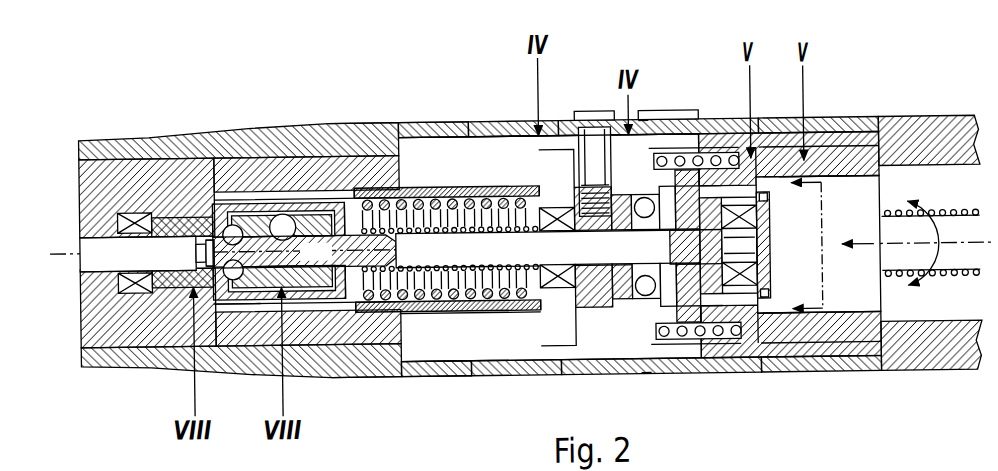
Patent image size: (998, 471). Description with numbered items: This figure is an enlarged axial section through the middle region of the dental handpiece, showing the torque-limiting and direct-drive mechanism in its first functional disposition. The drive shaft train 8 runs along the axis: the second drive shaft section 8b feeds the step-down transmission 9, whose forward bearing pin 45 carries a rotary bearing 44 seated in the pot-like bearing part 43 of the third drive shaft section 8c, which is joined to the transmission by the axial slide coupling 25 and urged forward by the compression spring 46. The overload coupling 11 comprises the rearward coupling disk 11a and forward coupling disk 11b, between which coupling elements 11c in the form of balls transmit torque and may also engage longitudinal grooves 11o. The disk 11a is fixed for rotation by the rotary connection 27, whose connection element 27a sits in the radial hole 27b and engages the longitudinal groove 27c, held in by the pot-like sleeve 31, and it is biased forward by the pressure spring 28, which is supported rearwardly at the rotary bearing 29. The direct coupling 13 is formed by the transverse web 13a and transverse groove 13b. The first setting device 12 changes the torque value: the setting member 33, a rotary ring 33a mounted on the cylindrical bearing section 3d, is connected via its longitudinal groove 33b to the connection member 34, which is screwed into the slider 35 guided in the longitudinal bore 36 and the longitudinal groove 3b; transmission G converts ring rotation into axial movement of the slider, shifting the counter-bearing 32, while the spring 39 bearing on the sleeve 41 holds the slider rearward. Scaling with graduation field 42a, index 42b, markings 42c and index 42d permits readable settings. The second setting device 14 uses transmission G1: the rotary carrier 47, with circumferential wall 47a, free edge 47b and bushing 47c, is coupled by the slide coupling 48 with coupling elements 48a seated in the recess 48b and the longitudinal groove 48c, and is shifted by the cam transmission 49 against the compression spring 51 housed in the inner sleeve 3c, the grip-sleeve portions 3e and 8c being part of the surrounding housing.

The longitudinal groove 3b is at (517, 130).
The inner sleeve 3c is at (438, 128).
The cylindrical bearing section 3d is at (698, 130).
The sleeve portion 3e is at (828, 150).
The drive shaft train 8 is at (900, 345).
The second drive shaft section 8b is at (903, 284).
The third drive shaft section 8c is at (437, 312).
The step-down transmission 9 is at (848, 300).
The overload coupling 11 is at (250, 370).
The rearward coupling disk 11a is at (322, 300).
The forward coupling disk 11b is at (165, 300).
The coupling elements 11c is at (222, 300).
The longitudinal grooves 11o is at (255, 300).
The first setting device 12 is at (596, 112).
The direct coupling 13 is at (192, 231).
The transverse web 13a is at (211, 236).
The transverse groove 13b is at (185, 250).
The second setting device 14 is at (668, 109).
The axial slide coupling 25 is at (752, 305).
The rotary connection 27 is at (300, 208).
The connection element 27a is at (304, 252).
The radial hole 27b is at (284, 197).
The longitudinal groove 27c is at (330, 214).
The pressure spring 28 is at (484, 299).
The rotary bearing 29 is at (522, 240).
The pot-like sleeve 31 is at (224, 203).
The counter-bearing 32 is at (510, 311).
The setting member 33 is at (505, 121).
The rotary ring 33a is at (692, 125).
The longitudinal groove 33b is at (560, 160).
The connection member 34 is at (592, 130).
The slider 35 is at (545, 311).
The longitudinal bore 36 is at (644, 300).
The spring 39 is at (400, 310).
The sleeve 41 is at (344, 300).
The graduation field 42a is at (398, 124).
The index 42b is at (416, 121).
The markings 42c is at (373, 121).
The index 42d is at (428, 133).
The pot-like bearing part 43 is at (760, 320).
The rotary bearing 44 is at (770, 200).
The bearing pin 45 is at (771, 248).
The compression spring 46 is at (770, 296).
The rotary carrier 47 is at (688, 296).
The circumferential wall 47a is at (700, 330).
The free edge 47b is at (762, 330).
The bushing 47c is at (650, 165).
The slide coupling 48 is at (618, 305).
The coupling elements 48a is at (585, 300).
The recess 48b is at (612, 232).
The longitudinal groove 48c is at (696, 250).
The cam transmission 49 is at (806, 335).
The compression spring 51 is at (728, 135).
The transmission G is at (645, 127).
The second movement conversion transmission G1 is at (768, 150).